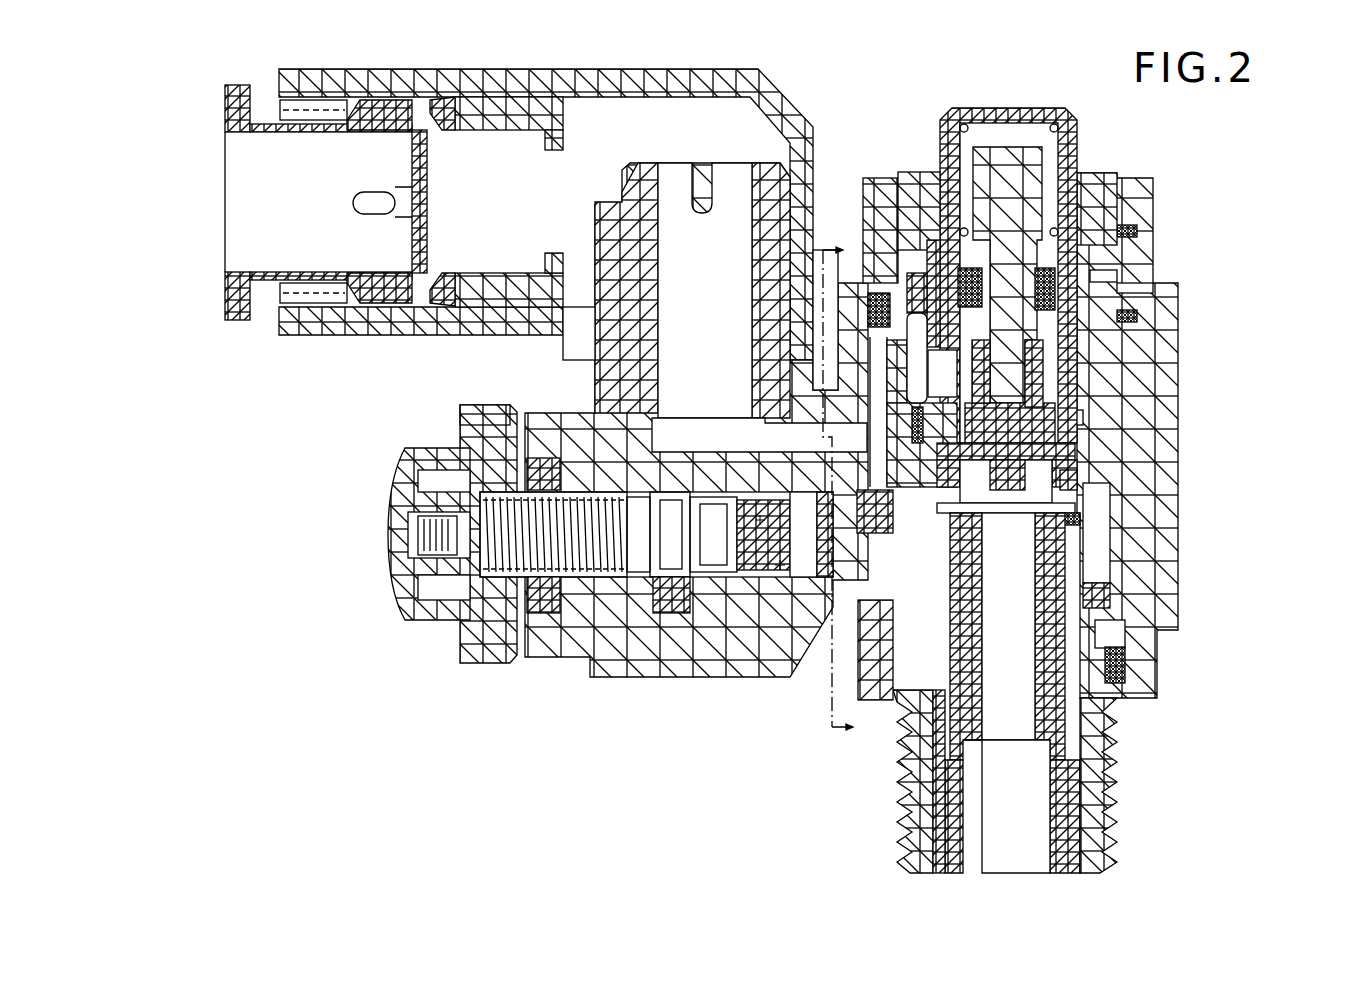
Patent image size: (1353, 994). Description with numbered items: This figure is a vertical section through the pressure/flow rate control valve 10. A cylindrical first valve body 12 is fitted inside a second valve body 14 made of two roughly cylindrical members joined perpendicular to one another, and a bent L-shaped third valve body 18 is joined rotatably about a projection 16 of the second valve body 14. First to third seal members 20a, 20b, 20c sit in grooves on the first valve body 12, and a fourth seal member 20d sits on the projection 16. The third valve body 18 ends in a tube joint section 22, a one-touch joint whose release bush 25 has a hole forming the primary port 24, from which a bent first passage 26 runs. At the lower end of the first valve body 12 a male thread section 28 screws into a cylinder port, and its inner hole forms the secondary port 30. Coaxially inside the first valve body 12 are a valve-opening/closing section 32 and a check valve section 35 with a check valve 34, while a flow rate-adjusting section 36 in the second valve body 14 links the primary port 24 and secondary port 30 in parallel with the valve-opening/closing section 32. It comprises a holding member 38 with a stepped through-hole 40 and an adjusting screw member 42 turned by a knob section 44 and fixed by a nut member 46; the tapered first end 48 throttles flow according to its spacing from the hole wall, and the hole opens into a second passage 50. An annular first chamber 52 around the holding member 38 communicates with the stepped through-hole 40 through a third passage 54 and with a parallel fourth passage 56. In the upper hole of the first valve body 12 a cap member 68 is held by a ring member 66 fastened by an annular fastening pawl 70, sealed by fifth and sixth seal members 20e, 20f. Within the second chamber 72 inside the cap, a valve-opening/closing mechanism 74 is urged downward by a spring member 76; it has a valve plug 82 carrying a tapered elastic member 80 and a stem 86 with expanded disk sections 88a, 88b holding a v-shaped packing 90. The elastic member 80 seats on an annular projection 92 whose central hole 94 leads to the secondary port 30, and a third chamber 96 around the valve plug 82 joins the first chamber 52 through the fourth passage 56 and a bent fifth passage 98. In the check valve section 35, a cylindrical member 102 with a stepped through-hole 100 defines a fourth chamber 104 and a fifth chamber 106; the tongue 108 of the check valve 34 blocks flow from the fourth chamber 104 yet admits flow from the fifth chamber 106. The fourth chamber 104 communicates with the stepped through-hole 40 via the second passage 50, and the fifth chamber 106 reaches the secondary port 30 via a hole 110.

The pressure/flow rate control valve 10 is at (1311, 113).
The first valve body 12 is at (1153, 200).
The second valve body 14 is at (1163, 472).
The projection 16 is at (771, 176).
The third valve body 18 is at (562, 76).
The first seal member 20a is at (1117, 290).
The second seal member 20b is at (1100, 523).
The third seal member 20c is at (1100, 660).
The fourth seal member 20d is at (590, 325).
The fifth seal member 20e is at (1090, 276).
The sixth seal member 20f is at (1100, 423).
The tube joint section 22 is at (356, 96).
The primary port 24 is at (248, 263).
The release bush 25 is at (230, 103).
The first passage 26 is at (721, 306).
The male thread section 28 is at (1100, 783).
The secondary port 30 is at (983, 830).
The valve-opening/closing section 32 is at (997, 324).
The check valve 34 is at (1100, 713).
The check valve section 35 is at (1100, 620).
The flow rate-adjusting section 36 is at (665, 584).
The holding member 38 is at (567, 580).
The stepped through-hole 40 is at (570, 575).
The adjusting screw member 42 is at (540, 605).
The knob section 44 is at (392, 545).
The nut member 46 is at (480, 665).
The first end 48 is at (785, 590).
The second passage 50 is at (876, 592).
The first chamber 52 is at (650, 428).
The third passage 54 is at (457, 433).
The fourth passage 56 is at (797, 424).
The ring member 66 is at (912, 172).
The cap member 68 is at (958, 115).
The fastening pawl 70 is at (887, 176).
The second chamber 72 is at (1020, 137).
The valve-opening/closing mechanism 74 is at (1100, 340).
The spring member 76 is at (1045, 128).
The elastic member 80 is at (1100, 457).
The valve plug 82 is at (1100, 405).
The stem 86 is at (1055, 165).
The disk section 88a is at (1125, 230).
The disk section 88b is at (1095, 316).
The packing 90 is at (1090, 256).
The annular projection 92 is at (1100, 500).
The hole 94 is at (1100, 543).
The third chamber 96 is at (1100, 383).
The fifth passage 98 is at (872, 250).
The stepped through-hole 100 is at (1044, 626).
The cylindrical member 102 is at (1075, 835).
The fourth chamber 104 is at (1100, 578).
The fifth chamber 106 is at (1100, 743).
The tongue 108 is at (1100, 687).
The hole 110 is at (950, 787).